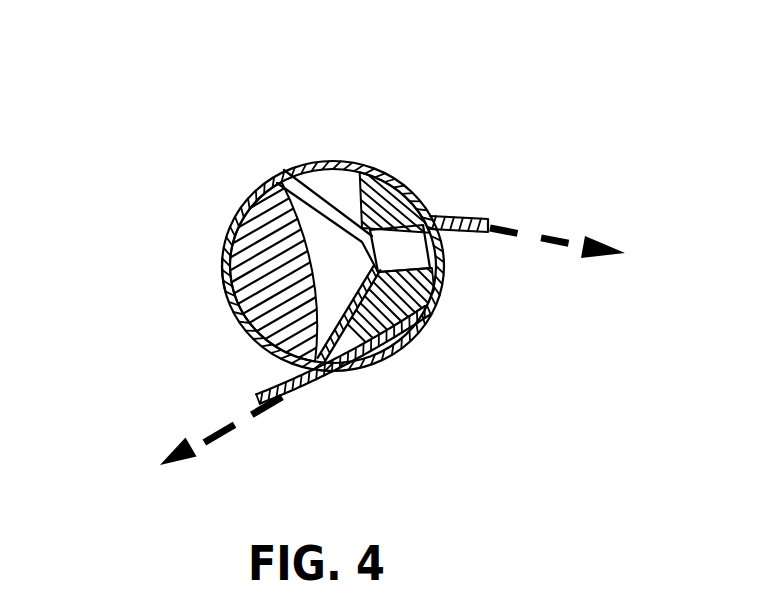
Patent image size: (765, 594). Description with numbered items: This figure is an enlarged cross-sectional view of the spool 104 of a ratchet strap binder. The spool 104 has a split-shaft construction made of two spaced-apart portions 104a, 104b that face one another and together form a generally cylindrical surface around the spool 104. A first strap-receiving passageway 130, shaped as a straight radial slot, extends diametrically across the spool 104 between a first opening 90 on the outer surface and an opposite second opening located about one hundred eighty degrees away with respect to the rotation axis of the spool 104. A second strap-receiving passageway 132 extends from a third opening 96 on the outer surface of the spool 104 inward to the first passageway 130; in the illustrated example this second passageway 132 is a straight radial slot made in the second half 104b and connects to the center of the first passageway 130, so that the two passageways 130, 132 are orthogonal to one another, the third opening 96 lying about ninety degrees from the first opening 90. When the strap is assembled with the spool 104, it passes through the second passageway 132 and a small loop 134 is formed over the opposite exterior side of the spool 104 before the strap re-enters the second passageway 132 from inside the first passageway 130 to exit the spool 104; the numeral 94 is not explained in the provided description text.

The first opening 90 is at (313, 166).
The first strap-receiving passageway 130 is at (327, 247).
The spool 104 is at (465, 191).
The first spool portion 104a is at (237, 263).
The second spool portion 104b is at (410, 183).
The small loop 134 is at (232, 296).
The second strap-receiving passageway 132 is at (398, 250).
The first strap section 94 is at (340, 375).
The third opening 96 is at (442, 243).